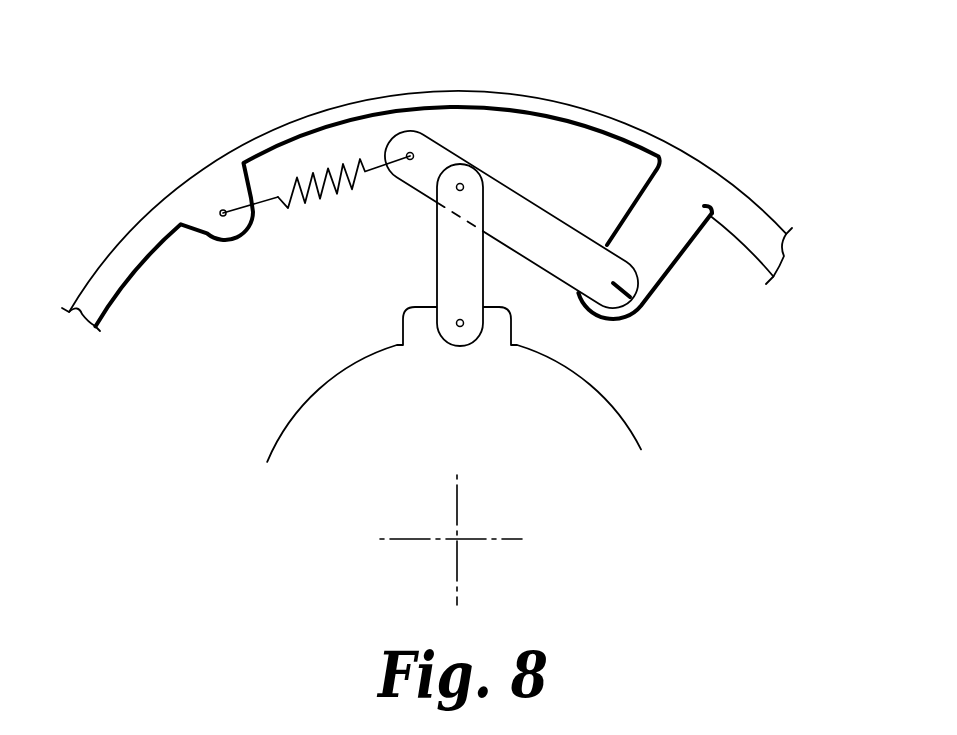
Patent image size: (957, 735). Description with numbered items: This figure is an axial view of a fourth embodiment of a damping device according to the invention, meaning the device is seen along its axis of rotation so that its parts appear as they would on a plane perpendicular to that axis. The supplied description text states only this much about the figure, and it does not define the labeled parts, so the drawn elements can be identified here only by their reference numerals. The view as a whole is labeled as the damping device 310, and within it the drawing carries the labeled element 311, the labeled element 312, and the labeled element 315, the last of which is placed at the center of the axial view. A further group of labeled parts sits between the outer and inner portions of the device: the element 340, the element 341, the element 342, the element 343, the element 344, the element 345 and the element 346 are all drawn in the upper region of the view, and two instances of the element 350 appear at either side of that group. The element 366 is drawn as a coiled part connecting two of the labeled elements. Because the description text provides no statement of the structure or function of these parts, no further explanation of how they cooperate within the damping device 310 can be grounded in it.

The ratchet wheel assembly 310 is at (648, 93).
The ring 311 is at (737, 210).
The hub 312 is at (481, 428).
The axis of rotation 315 is at (457, 539).
The locking mechanism 340 is at (458, 127).
The lever linkage 341 is at (463, 243).
The pivot pin 342 is at (457, 323).
The lever end 343 is at (568, 262).
The lever 344 is at (640, 303).
The pivot pin 345 is at (465, 187).
The link 346 is at (458, 270).
The pawl 350 is at (207, 233).
The spring 366 is at (313, 175).